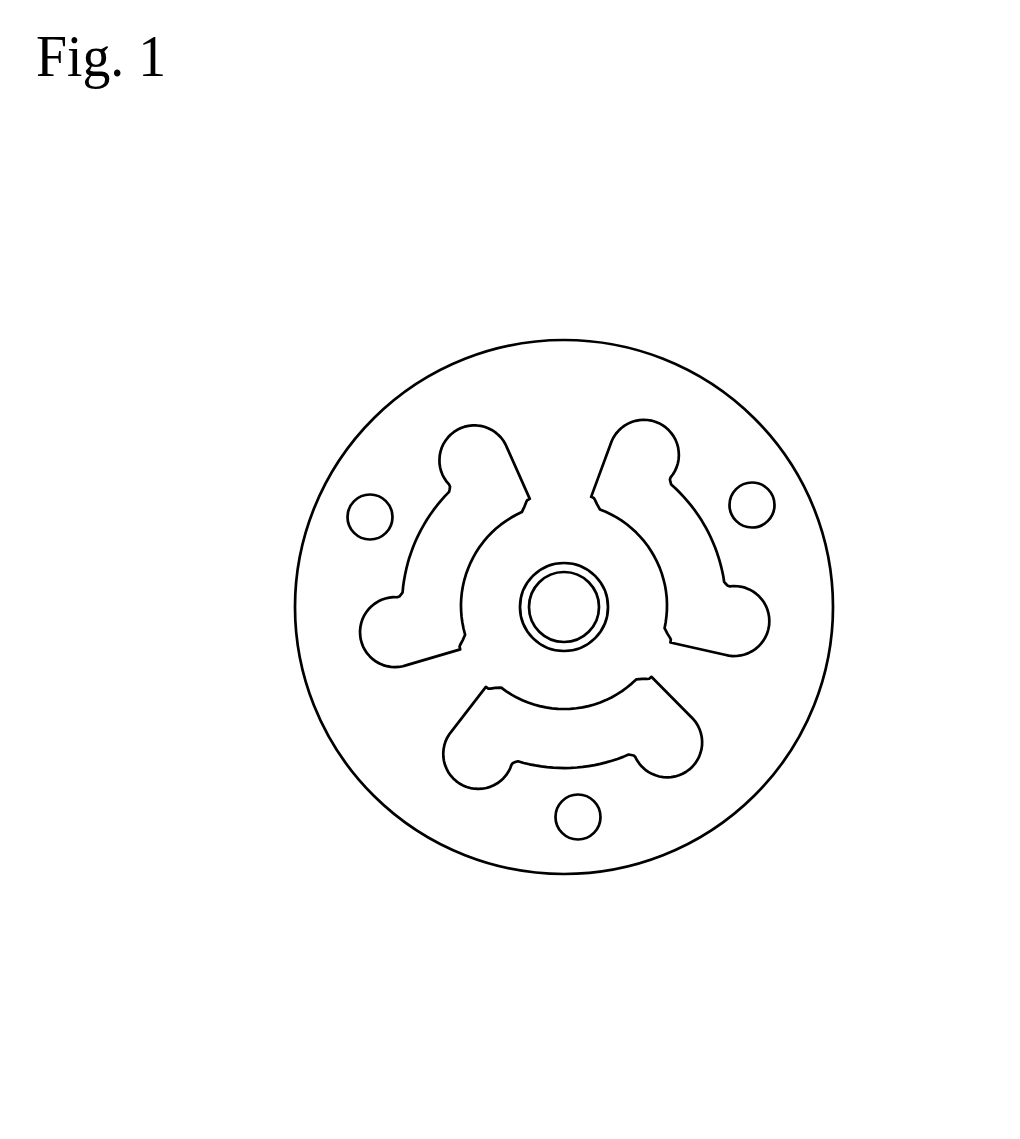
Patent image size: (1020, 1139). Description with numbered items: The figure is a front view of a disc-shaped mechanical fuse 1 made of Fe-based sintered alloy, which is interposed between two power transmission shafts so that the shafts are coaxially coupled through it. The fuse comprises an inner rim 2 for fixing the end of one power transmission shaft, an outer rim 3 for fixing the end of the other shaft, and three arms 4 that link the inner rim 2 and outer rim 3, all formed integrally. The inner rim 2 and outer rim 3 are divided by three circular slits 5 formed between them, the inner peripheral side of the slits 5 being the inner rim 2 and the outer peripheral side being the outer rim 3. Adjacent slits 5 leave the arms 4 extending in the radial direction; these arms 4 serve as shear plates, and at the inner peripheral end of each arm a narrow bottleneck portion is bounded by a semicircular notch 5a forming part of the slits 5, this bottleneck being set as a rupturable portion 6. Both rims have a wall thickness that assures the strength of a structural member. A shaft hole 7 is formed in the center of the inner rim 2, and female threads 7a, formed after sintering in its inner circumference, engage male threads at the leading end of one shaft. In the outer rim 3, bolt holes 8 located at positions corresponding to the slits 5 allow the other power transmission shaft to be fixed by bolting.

The mechanical fuse 1 is at (309, 388).
The inner rim 2 is at (635, 578).
The outer rim 3 is at (790, 687).
The arm 4 is at (705, 685).
The circular slit 5 is at (582, 735).
The semicircular notch 5a is at (515, 498).
The rupturable portion 6 is at (560, 490).
The shaft hole 7 is at (560, 622).
The female threads 7a is at (548, 597).
The bolt hole 8 is at (368, 512).